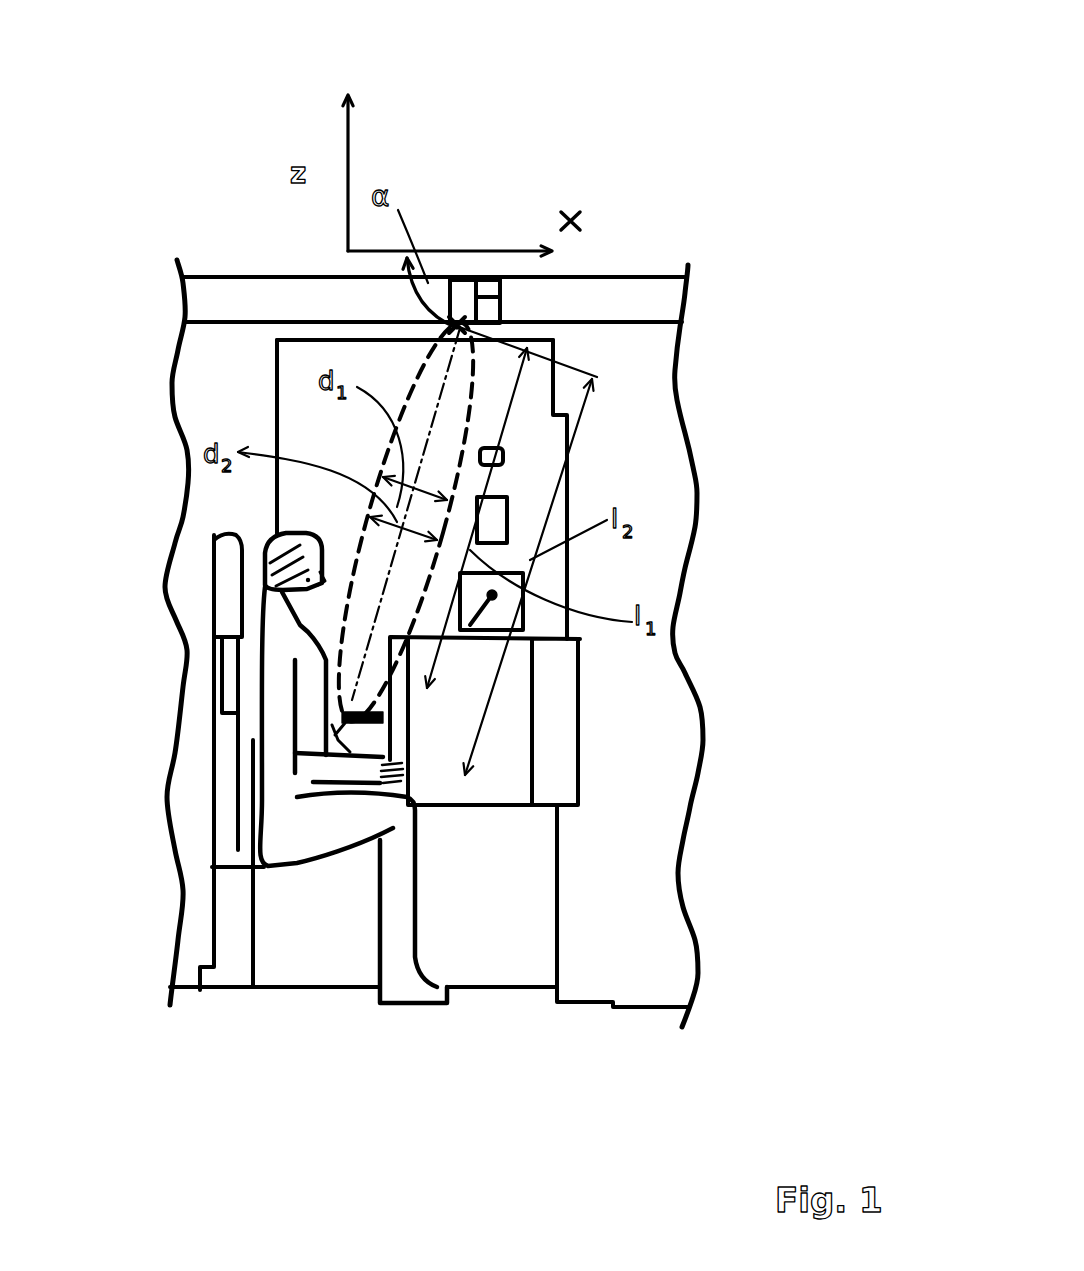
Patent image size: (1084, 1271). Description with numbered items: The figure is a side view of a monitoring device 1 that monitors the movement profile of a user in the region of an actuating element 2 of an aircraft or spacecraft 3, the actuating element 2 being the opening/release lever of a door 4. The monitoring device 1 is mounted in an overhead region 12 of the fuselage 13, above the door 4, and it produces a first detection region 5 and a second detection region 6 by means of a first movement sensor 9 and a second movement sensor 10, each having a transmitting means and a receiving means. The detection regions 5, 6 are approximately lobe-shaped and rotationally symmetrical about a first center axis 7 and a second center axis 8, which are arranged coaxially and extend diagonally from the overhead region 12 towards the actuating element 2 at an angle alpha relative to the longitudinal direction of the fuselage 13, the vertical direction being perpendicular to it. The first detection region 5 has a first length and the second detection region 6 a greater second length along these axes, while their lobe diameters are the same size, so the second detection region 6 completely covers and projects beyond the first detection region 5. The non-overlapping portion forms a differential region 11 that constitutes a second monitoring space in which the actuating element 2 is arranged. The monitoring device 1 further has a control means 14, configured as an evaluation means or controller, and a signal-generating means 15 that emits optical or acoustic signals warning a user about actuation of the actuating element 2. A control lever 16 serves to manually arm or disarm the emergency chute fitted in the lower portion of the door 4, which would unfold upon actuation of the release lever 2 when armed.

The monitoring device 1 is at (488, 217).
The actuating element 2 is at (405, 742).
The aircraft or spacecraft 3 is at (725, 78).
The door 4 is at (530, 490).
The first detection region 5 is at (450, 403).
The second detection region 6 is at (350, 669).
The first center axis 7 is at (483, 268).
The second center axis 8 is at (335, 735).
The first movement sensor 9 is at (462, 298).
The second movement sensor 10 is at (487, 313).
The differential region 11 is at (350, 669).
The overhead region 12 is at (283, 303).
The fuselage 13 is at (613, 897).
The control means 14 is at (463, 290).
The signal-generating means 15 is at (503, 453).
The control lever 16 is at (492, 595).